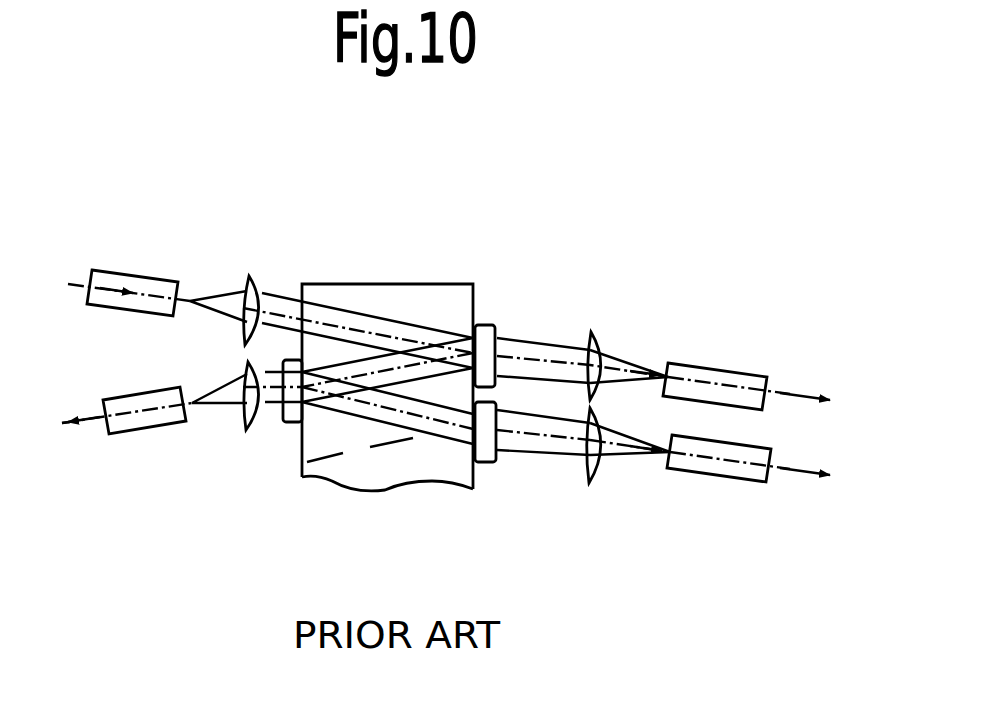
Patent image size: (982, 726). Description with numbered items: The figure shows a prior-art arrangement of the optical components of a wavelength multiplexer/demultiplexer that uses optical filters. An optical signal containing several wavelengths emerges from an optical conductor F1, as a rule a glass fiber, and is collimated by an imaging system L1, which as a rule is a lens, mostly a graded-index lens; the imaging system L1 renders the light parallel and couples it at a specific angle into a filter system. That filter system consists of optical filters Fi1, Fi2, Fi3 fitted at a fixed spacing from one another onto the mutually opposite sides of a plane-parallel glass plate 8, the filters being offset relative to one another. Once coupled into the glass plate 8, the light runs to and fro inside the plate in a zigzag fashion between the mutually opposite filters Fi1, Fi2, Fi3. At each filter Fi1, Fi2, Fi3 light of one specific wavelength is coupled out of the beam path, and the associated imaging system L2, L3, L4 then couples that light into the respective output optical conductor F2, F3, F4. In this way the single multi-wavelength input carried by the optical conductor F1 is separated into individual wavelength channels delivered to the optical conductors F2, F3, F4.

The plane-parallel glass plate 8 is at (373, 302).
The optical conductor F1 is at (157, 269).
The optical conductor F2 is at (726, 362).
The optical conductor F3 is at (154, 386).
The optical conductor F4 is at (728, 488).
The imaging system L1 is at (352, 292).
The imaging system L2 is at (582, 340).
The imaging system L3 is at (243, 382).
The imaging system L4 is at (628, 437).
The optical filter Fi1 is at (490, 325).
The optical filter Fi2 is at (292, 422).
The optical filter Fi3 is at (488, 462).